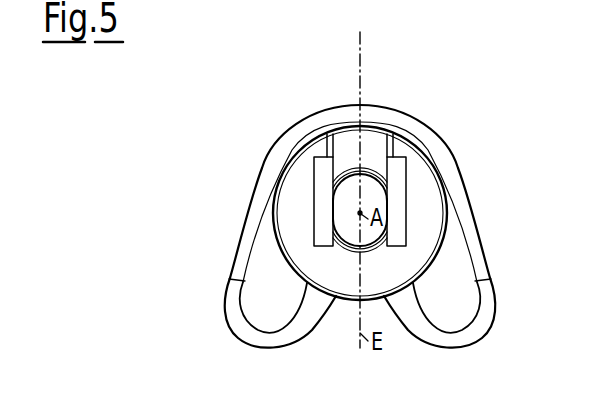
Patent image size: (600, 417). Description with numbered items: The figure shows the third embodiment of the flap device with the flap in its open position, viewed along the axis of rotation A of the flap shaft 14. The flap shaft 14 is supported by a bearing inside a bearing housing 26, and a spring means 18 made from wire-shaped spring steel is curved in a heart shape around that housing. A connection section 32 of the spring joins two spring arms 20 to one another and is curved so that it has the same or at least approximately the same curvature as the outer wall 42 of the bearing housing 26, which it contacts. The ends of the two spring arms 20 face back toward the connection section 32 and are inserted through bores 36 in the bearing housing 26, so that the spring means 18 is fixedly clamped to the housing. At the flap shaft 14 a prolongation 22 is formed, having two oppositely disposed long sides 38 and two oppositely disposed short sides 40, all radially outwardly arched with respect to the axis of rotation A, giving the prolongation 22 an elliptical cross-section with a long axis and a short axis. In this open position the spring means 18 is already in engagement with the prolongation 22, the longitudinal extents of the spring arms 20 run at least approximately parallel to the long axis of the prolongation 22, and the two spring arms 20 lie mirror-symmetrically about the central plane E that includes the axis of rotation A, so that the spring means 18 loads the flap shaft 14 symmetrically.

The flap shaft 14 is at (401, 143).
The spring means 18 is at (444, 151).
The spring arm 20 is at (322, 172).
The prolongation 22 is at (345, 209).
The bearing housing 26 is at (417, 253).
The connection section 32 is at (337, 118).
The bores 36 is at (320, 296).
The long sides 38 is at (338, 218).
The short sides 40 is at (352, 170).
The outer wall 42 is at (388, 133).